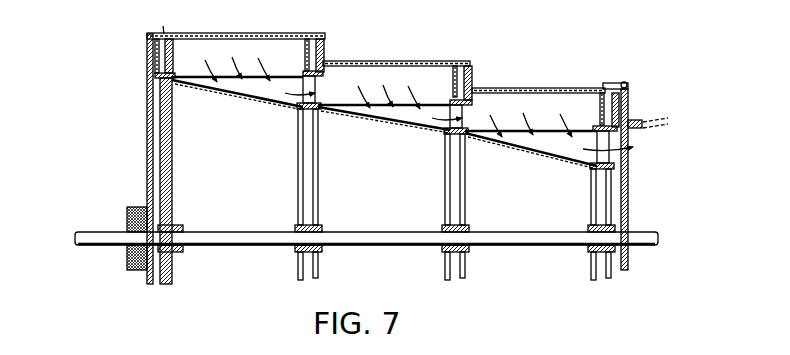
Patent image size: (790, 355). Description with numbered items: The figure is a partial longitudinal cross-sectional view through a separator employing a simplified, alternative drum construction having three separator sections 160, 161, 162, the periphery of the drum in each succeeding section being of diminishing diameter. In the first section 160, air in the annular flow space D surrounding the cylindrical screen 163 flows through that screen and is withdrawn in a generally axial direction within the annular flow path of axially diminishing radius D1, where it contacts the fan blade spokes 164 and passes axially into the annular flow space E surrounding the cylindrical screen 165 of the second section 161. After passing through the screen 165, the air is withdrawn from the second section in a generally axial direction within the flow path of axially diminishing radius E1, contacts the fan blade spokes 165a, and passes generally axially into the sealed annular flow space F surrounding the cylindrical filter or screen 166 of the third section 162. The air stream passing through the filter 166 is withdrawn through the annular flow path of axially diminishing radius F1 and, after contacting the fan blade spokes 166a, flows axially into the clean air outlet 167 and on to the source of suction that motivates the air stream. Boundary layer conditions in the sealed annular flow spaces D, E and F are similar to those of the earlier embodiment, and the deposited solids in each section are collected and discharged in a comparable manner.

The first separator section 160 is at (249, 208).
The second separator section 161 is at (391, 208).
The third separator section 162 is at (525, 208).
The cylindrical screen 163 is at (283, 70).
The fan blade spokes 164 is at (324, 90).
The cylindrical screen 165 is at (410, 76).
The fan blade spokes 165a is at (471, 116).
The cylindrical filter or screen 166 is at (556, 104).
The fan blade spokes 166a is at (628, 123).
The clean air outlet 167 is at (678, 170).
The annular flow space D is at (236, 57).
The annular flow path of axially diminishing radius D1 is at (284, 92).
The annular flow space E is at (396, 85).
The flow path of axially diminishing radius E1 is at (433, 117).
The sealed annular flow space F is at (538, 112).
The annular flow path of axially diminishing radius F1 is at (567, 149).